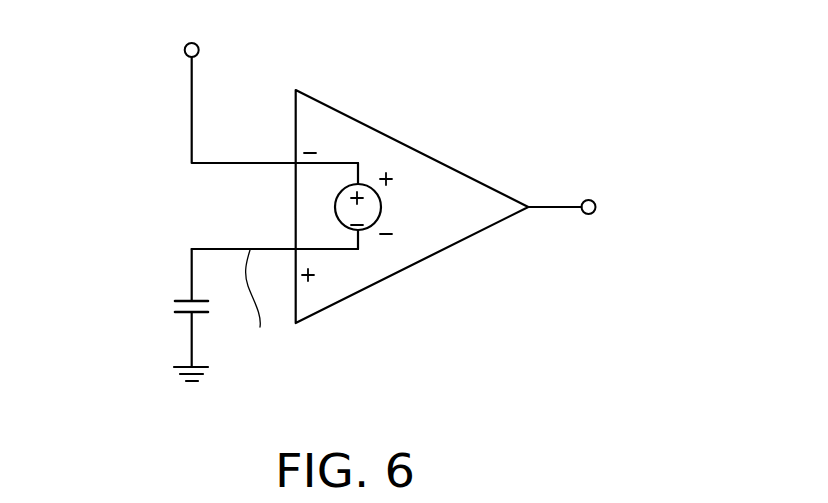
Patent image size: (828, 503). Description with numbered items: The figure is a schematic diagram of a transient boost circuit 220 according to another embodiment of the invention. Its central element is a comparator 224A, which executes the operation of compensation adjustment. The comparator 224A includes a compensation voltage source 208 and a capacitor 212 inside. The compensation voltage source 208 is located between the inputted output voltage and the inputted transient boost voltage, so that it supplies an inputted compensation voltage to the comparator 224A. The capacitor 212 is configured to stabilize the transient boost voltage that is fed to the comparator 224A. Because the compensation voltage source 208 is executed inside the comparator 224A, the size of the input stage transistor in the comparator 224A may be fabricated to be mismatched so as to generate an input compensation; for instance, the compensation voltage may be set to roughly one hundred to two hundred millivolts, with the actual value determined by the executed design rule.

The transient boost circuit 220 is at (658, 43).
The comparator 224A is at (427, 150).
The compensation voltage source 208 is at (334, 208).
The capacitor 212 is at (170, 307).